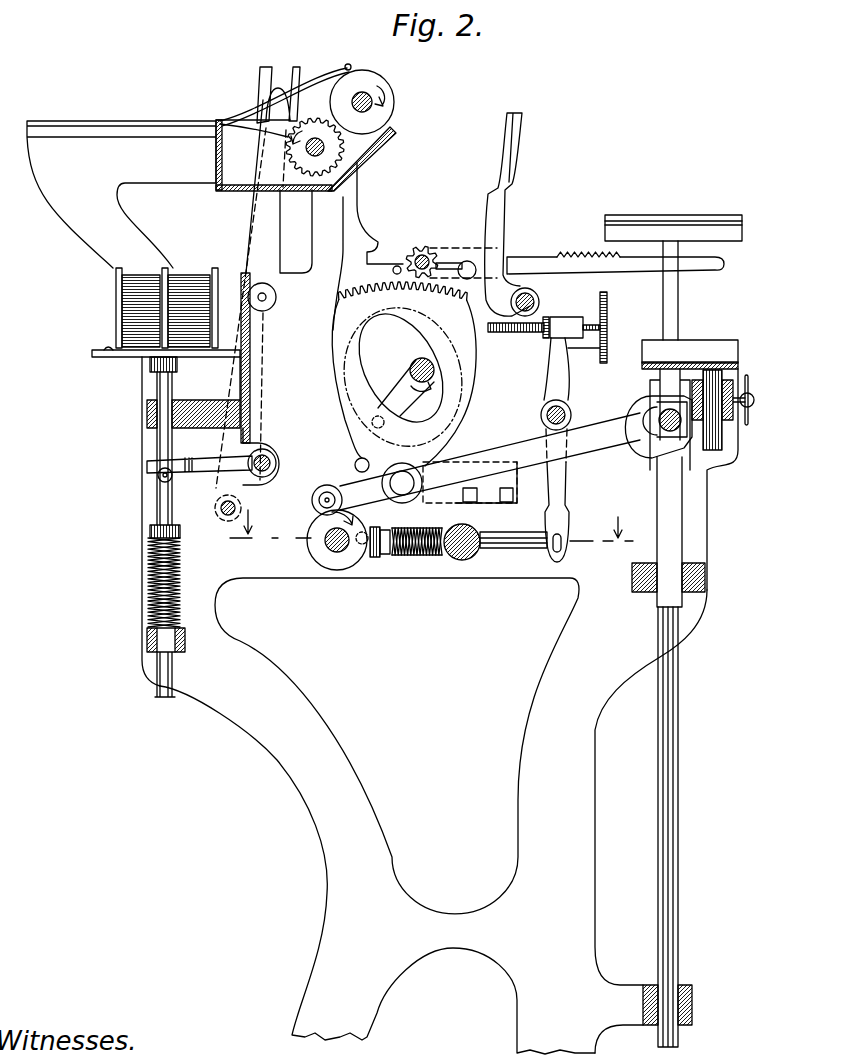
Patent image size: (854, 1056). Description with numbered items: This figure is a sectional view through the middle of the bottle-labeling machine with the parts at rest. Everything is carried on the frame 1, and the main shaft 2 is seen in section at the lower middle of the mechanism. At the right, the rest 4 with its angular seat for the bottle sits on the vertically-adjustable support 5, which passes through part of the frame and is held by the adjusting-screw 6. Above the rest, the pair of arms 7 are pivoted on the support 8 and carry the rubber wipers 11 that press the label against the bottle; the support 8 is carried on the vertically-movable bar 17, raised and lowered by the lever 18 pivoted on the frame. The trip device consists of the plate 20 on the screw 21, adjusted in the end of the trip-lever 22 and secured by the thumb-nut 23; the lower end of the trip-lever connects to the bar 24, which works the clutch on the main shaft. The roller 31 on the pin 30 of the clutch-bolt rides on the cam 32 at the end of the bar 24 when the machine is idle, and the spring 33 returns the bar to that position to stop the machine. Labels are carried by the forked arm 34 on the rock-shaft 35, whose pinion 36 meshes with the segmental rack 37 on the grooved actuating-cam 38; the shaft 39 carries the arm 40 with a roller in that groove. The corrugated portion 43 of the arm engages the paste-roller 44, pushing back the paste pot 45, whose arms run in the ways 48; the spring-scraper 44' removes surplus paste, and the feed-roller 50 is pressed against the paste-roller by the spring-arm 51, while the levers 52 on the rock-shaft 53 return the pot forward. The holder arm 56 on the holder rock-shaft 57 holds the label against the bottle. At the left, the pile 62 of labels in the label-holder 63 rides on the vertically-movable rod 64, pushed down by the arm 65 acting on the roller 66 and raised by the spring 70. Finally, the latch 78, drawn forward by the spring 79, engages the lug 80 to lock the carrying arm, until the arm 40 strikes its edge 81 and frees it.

The frame 1 is at (433, 816).
The main shaft 2 is at (327, 543).
The rest 4 is at (709, 344).
The vertically-adjustable support 5 is at (733, 440).
The adjusting-screw 6 is at (765, 396).
The arms 7 is at (678, 311).
The support 8 is at (656, 410).
The wipers 11 is at (668, 215).
The vertically-movable bar 17 is at (678, 679).
The lever 18 is at (476, 464).
The plate 20 is at (607, 321).
The screw 21 is at (524, 334).
The trip-lever 22 is at (553, 380).
The thumb-nut 23 is at (549, 321).
The bar 24 is at (513, 532).
The pin 30 is at (383, 531).
The roller 31 is at (373, 560).
The cam 32 is at (386, 560).
The spring 33 is at (421, 556).
The forked or bifurcated arm 34 is at (537, 262).
The rock-shaft 35 is at (428, 254).
The pinion 36 is at (418, 250).
The segmental rack 37 is at (338, 291).
The label-carrier grooved actuating-cam 38 is at (466, 391).
The shaft 39 is at (418, 364).
The arm 40 is at (401, 368).
The roughened or corrugated portion 43 is at (583, 250).
The paste-roller 44 is at (377, 102).
The spring-scraper 44' is at (285, 91).
The paste pot 45 is at (306, 155).
The ways 48 is at (158, 132).
The feed-roller 50 is at (315, 147).
The spring-arm 51 is at (256, 125).
The levers 52 is at (258, 229).
The rock-shaft 53 is at (218, 509).
The arm 56 is at (500, 238).
The holder rock-shaft 57 is at (538, 297).
The pile 62 is at (140, 285).
The label-holder 63 is at (105, 346).
The vertically-movable rod 64 is at (157, 390).
The arm 65 is at (148, 462).
The roller 66 is at (160, 478).
The spring 70 is at (150, 581).
The latch 78 is at (357, 241).
The spring 79 is at (453, 295).
The lug 80 is at (469, 261).
The edge 81 is at (394, 286).